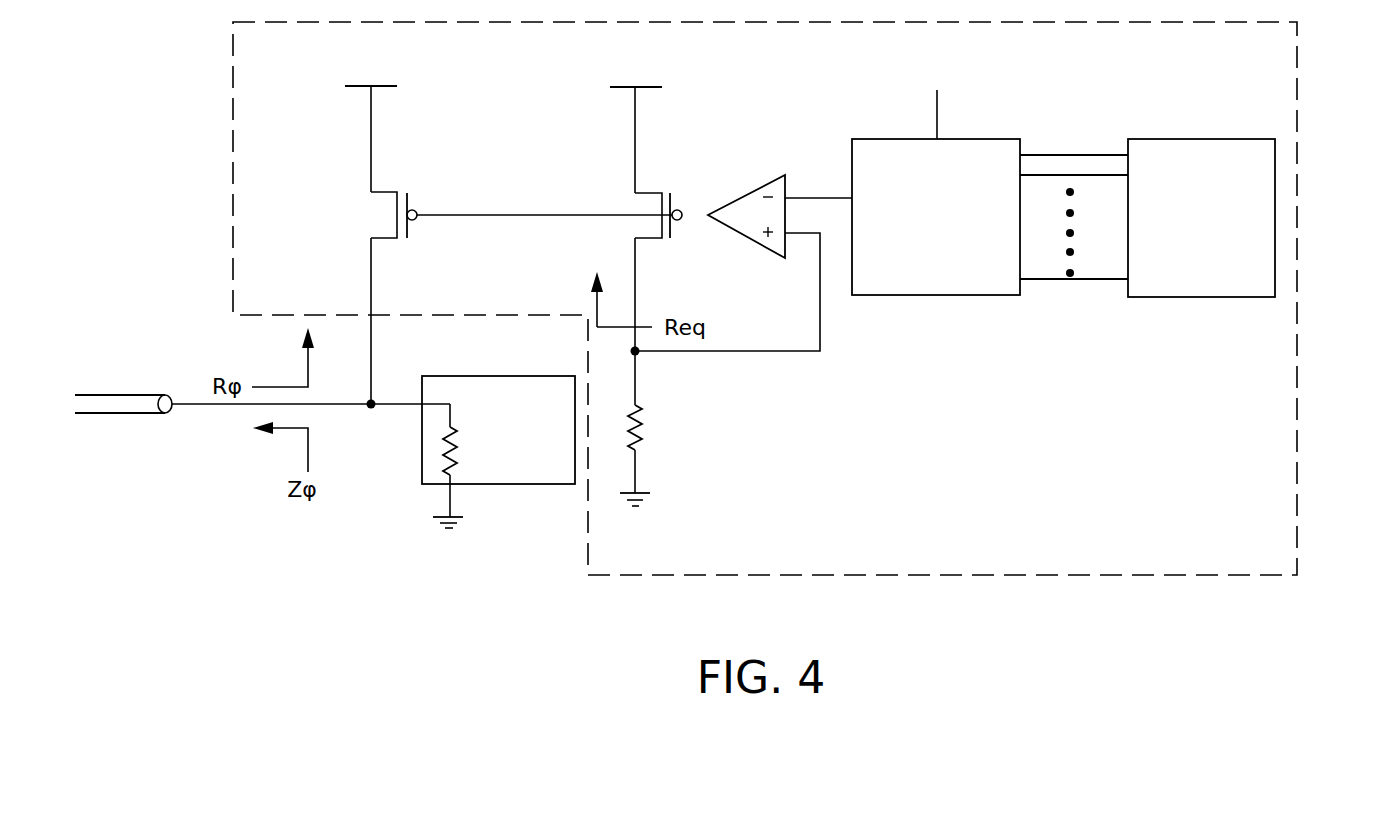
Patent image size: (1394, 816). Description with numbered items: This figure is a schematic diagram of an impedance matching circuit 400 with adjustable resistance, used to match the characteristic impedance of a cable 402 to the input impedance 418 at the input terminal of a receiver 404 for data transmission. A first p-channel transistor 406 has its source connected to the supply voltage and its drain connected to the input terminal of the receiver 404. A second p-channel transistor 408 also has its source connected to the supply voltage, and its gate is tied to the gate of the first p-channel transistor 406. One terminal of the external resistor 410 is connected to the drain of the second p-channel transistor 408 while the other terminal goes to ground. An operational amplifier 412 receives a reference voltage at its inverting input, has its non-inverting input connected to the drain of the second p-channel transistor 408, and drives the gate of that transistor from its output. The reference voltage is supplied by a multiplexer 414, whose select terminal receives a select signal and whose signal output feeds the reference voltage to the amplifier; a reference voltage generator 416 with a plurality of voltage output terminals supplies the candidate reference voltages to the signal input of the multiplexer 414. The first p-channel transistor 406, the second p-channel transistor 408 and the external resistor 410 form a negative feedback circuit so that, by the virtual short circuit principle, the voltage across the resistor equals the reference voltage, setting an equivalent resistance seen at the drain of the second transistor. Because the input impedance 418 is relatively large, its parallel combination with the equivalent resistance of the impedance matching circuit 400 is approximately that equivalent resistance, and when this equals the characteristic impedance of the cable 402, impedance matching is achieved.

The impedance matching circuit 400 is at (1297, 508).
The cable 402 is at (117, 416).
The receiver 404 is at (465, 467).
The PMOS 406 is at (409, 198).
The PMOS 408 is at (676, 196).
The resistor Rext 410 is at (645, 407).
The operational amplifier 412 is at (764, 178).
The multiplexer 414 is at (852, 139).
The reference voltage generator 416 is at (1138, 139).
The input impedance Zin 418 is at (445, 430).